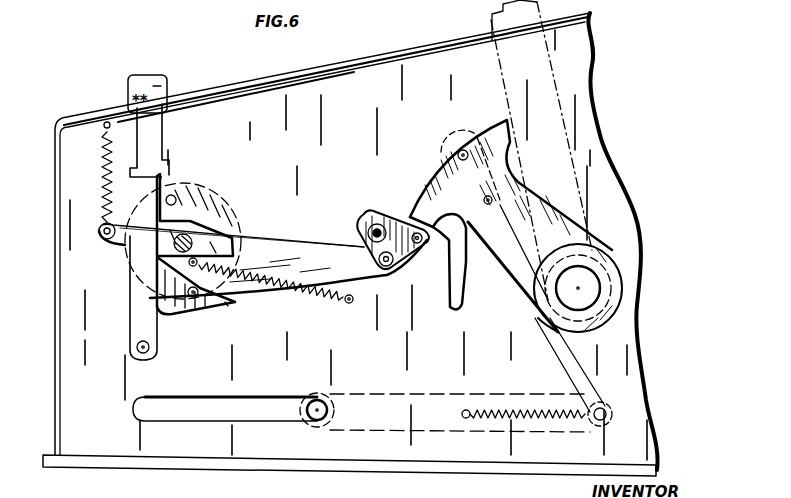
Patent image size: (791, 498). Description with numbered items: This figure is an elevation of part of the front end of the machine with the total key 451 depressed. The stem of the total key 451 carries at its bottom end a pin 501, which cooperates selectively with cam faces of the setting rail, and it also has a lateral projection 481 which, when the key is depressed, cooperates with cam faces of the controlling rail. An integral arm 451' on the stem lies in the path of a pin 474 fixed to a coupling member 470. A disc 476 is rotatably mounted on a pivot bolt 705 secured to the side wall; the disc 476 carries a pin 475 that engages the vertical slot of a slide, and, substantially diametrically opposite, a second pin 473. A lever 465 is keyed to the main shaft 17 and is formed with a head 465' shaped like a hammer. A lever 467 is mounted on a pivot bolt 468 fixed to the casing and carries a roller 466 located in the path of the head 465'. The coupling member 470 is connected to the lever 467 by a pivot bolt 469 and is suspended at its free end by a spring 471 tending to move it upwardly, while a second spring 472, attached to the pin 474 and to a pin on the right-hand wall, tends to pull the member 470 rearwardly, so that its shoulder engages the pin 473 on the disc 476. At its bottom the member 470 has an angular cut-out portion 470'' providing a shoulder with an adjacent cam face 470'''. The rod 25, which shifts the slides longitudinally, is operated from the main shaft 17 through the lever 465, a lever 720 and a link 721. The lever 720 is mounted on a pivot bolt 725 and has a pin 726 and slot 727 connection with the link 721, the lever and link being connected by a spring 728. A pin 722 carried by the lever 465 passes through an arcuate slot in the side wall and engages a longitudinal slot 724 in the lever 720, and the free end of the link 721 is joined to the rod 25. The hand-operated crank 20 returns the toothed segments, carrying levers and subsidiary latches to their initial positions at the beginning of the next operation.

The hand-operated crank 20 is at (491, 16).
The spring 471 is at (105, 150).
The total key 451 is at (168, 140).
The lateral projection 481 is at (170, 162).
The second pin 473 is at (174, 198).
The disc 476 is at (224, 216).
The pivot bolt 705 is at (188, 240).
The integral arm 451' is at (242, 234).
The coupling member 470 is at (263, 260).
The angular cut-out portion 470'' is at (173, 283).
The cam face 470''' is at (249, 321).
The pin 474 is at (170, 268).
The pin 475 is at (193, 298).
The pin 501 is at (150, 354).
The second spring 472 is at (271, 286).
The pivot bolt 468 is at (378, 224).
The roller 466 is at (423, 242).
The lever 467 is at (405, 254).
The pivot bolt 469 is at (386, 267).
The lever 465 is at (600, 261).
The head 465' is at (504, 214).
The pivot bolt 725 is at (463, 150).
The pin 722 is at (491, 200).
The main shaft 17 is at (590, 290).
The lever 720 is at (498, 253).
The longitudinal slot 724 is at (522, 260).
The pin 726 is at (577, 405).
The slot 727 is at (607, 412).
The spring 728 is at (532, 418).
The link 721 is at (421, 387).
The rod 25 is at (318, 413).